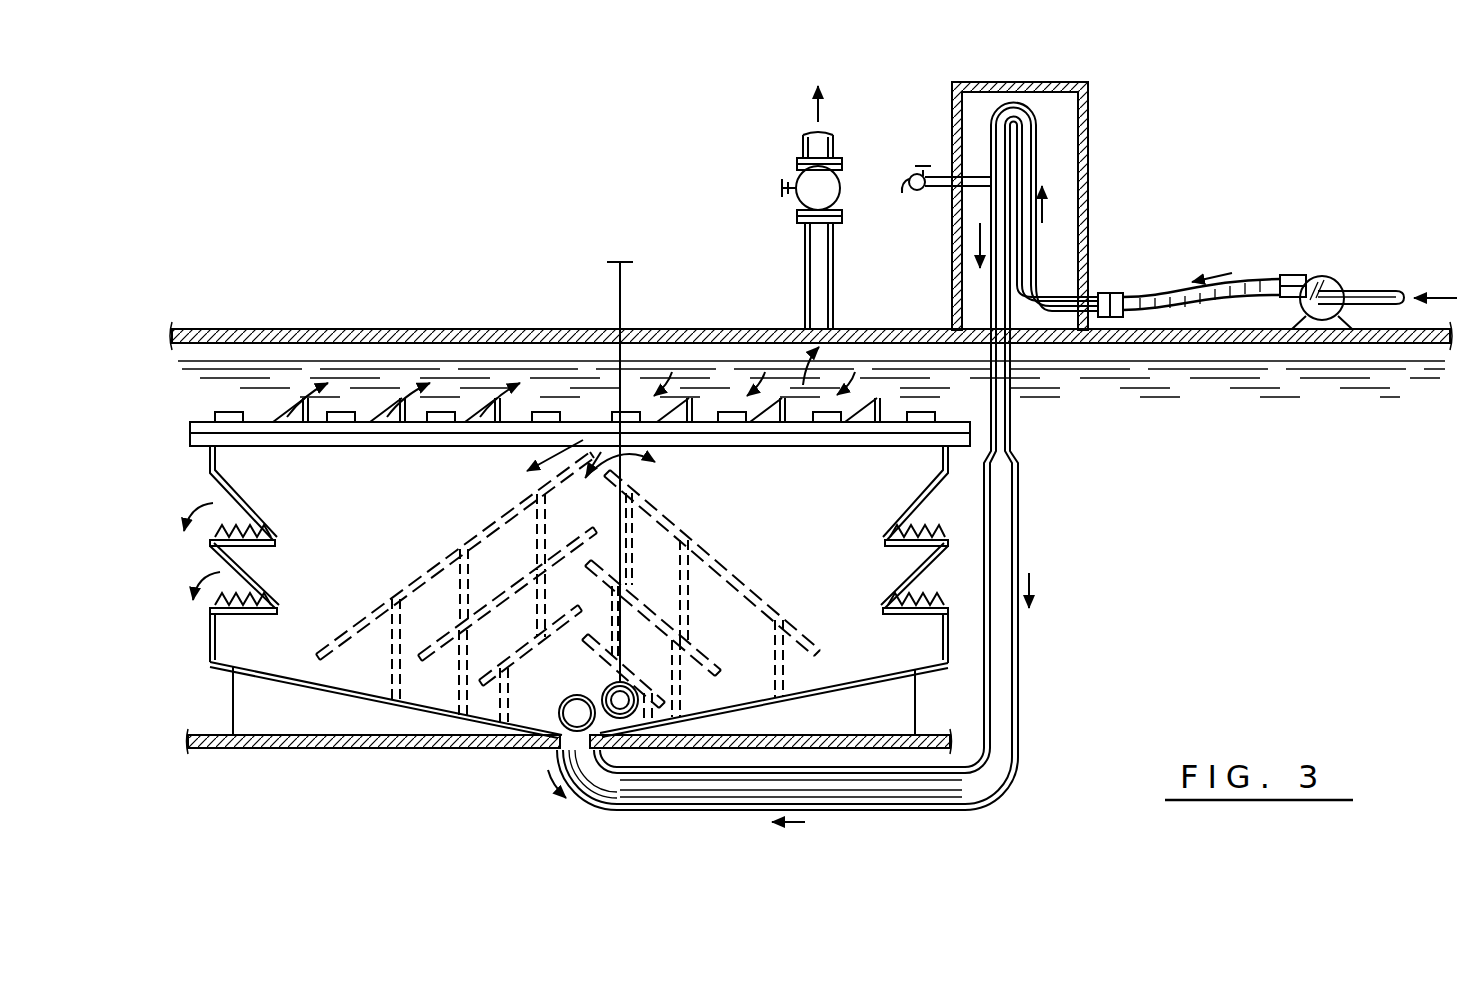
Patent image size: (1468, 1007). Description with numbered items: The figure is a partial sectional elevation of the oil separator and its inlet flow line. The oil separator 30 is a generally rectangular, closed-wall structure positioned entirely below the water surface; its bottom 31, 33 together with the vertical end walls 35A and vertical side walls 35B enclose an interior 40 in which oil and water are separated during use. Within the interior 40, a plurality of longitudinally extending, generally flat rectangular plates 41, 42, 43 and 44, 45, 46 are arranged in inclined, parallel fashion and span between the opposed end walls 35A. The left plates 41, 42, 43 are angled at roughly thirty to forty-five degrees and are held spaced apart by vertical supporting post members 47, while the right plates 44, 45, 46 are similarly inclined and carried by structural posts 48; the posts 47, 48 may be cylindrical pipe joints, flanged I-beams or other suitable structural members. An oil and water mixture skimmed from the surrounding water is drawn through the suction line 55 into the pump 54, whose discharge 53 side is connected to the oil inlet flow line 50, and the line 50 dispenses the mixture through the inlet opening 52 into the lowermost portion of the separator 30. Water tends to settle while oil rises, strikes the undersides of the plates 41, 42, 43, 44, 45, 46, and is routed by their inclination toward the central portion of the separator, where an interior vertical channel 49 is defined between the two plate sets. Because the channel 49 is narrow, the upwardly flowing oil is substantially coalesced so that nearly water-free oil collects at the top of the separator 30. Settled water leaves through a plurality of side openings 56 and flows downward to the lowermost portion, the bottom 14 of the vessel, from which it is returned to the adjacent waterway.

The bottom 14 is at (448, 750).
The oil separator 30 is at (575, 618).
The bottom 31 is at (579, 726).
The bottom 33 is at (308, 688).
The end walls 35A is at (614, 446).
The side walls 35B is at (205, 458).
The interior 40 is at (580, 432).
The plate 41 is at (428, 575).
The plate 42 is at (528, 580).
The plate 43 is at (533, 643).
The plate 44 is at (690, 540).
The plate 45 is at (688, 645).
The plate 46 is at (626, 679).
The vertical supporting post members 47 is at (548, 537).
The structural posts 48 is at (774, 679).
The interior vertical channel 49 is at (640, 467).
The oil inlet flow line 50 is at (840, 812).
The inlet opening 52 is at (574, 706).
The discharge 53 is at (1287, 274).
The pump 54 is at (1340, 283).
The suction line 55 is at (1397, 291).
The side openings 56 is at (233, 523).